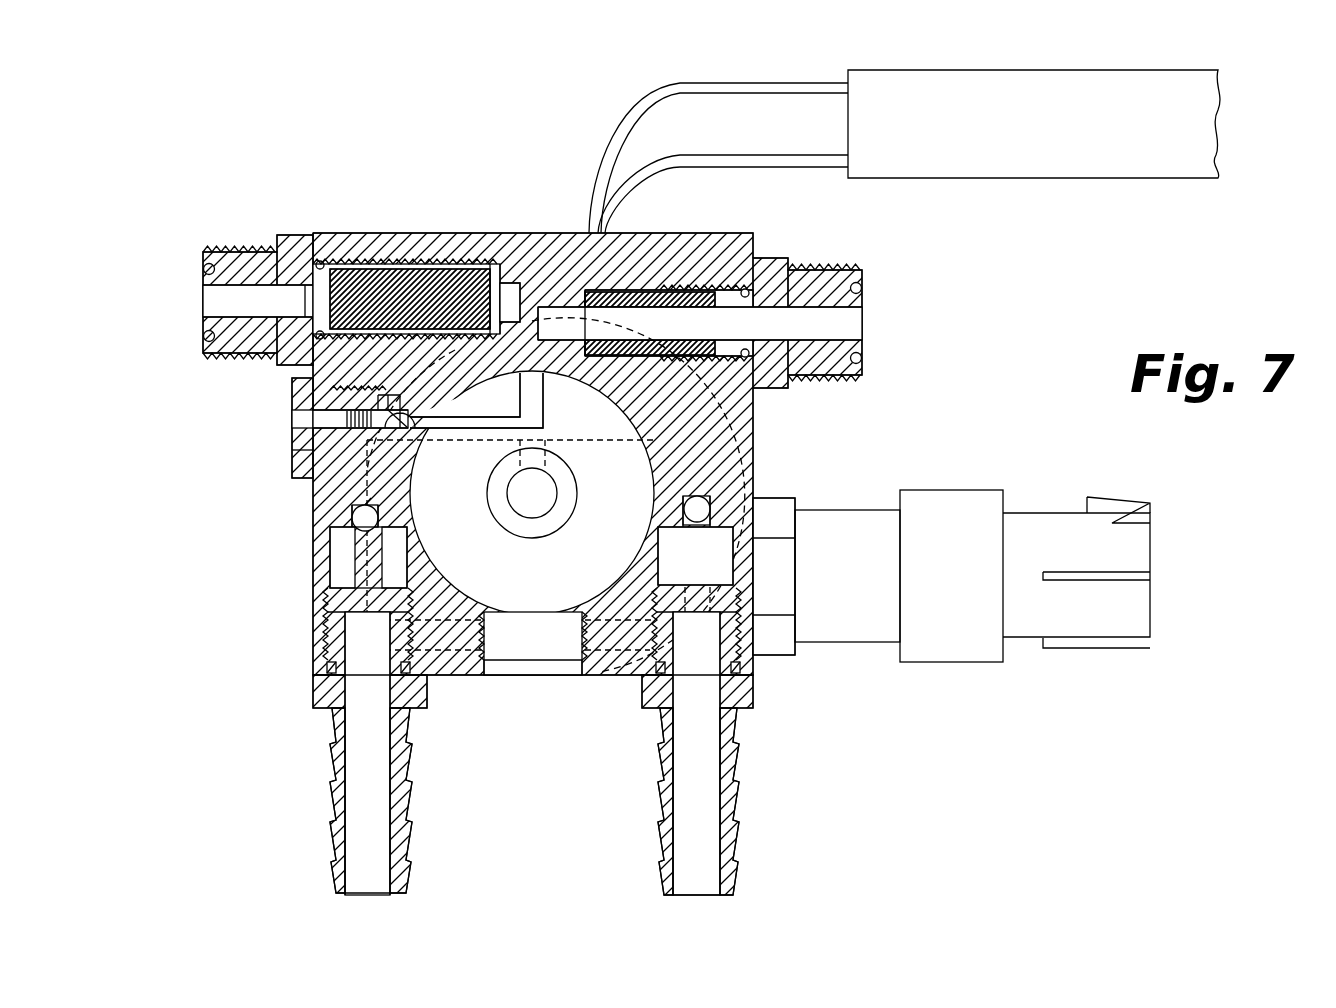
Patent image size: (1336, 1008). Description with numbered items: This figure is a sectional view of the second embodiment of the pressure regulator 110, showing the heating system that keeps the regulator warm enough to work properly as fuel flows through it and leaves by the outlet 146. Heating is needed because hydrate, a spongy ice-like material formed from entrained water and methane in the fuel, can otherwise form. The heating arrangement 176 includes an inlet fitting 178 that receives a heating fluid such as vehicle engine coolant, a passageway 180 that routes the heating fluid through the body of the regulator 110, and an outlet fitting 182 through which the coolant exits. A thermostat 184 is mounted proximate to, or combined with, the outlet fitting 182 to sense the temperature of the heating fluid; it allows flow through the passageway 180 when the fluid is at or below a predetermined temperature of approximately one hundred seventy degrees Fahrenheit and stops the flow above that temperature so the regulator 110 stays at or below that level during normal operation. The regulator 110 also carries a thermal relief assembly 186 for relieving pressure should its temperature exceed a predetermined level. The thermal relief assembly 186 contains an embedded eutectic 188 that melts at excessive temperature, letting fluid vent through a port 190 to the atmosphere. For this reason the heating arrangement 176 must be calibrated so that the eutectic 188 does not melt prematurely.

The pressure regulator 110 is at (955, 333).
The outlet 146 is at (563, 676).
The heating arrangement 176 is at (755, 800).
The inlet fitting 178 is at (737, 879).
The passageway 180 is at (365, 520).
The outlet fitting 182 is at (333, 876).
The thermostat 184 is at (348, 572).
The thermal relief assembly 186 is at (284, 210).
The eutectic 188 is at (376, 263).
The port 190 is at (206, 300).